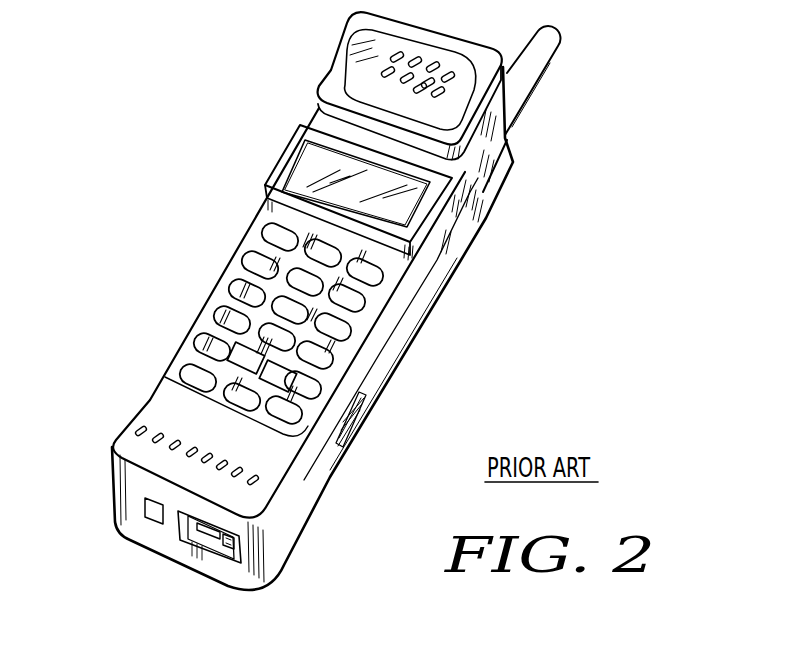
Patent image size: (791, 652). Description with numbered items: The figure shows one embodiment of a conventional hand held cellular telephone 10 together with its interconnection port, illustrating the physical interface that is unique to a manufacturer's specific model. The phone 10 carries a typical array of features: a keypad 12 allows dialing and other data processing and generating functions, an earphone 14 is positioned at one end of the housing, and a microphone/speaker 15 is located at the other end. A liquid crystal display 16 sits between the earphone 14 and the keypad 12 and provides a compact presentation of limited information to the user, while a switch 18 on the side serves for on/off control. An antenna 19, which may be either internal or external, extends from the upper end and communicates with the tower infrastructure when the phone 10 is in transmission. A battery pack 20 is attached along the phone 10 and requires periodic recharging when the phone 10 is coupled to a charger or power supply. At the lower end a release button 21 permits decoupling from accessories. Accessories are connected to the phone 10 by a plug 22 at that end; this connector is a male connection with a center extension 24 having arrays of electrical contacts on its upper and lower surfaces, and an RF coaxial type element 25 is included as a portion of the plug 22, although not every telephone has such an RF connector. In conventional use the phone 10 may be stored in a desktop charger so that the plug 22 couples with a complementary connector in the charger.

The hand held cellular telephone 10 is at (215, 192).
The keypad 12 is at (200, 268).
The earphone 14 is at (355, 78).
The microphone/speaker 15 is at (146, 426).
The liquid crystal display 16 is at (305, 162).
The switch 18 is at (498, 145).
The antenna 19 is at (549, 60).
The battery pack 20 is at (368, 421).
The release button 21 is at (152, 512).
The plug 22 is at (178, 561).
The center extension 24 is at (212, 543).
The RF coaxial type element 25 is at (231, 549).